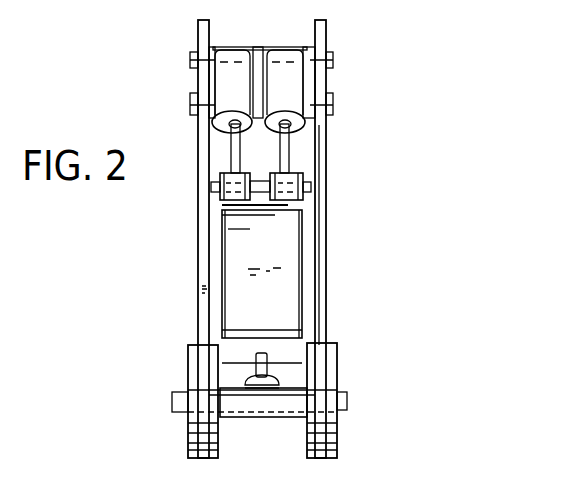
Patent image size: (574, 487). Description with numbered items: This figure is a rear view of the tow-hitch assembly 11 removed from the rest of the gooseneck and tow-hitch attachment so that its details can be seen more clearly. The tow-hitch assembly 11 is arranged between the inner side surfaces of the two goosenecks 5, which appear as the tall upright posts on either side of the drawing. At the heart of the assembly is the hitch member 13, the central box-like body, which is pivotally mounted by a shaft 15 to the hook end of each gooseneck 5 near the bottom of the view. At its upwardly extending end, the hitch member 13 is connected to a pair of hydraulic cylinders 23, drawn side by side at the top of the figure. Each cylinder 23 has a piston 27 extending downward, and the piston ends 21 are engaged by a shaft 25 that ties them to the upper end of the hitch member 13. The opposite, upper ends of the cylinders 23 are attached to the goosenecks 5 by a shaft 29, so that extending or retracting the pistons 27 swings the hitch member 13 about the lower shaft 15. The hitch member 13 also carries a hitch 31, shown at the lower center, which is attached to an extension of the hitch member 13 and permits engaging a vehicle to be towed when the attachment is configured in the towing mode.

The tow-hitch assembly 11 is at (436, 112).
The gooseneck 5 is at (199, 234).
The hitch member 13 is at (285, 297).
The shaft 15 is at (337, 397).
The hitch 31 is at (255, 360).
The hydraulic cylinders 23 is at (223, 77).
The shaft 29 is at (332, 53).
The pistons 27 is at (290, 148).
The piston ends 21 is at (302, 175).
The shaft 25 is at (312, 188).